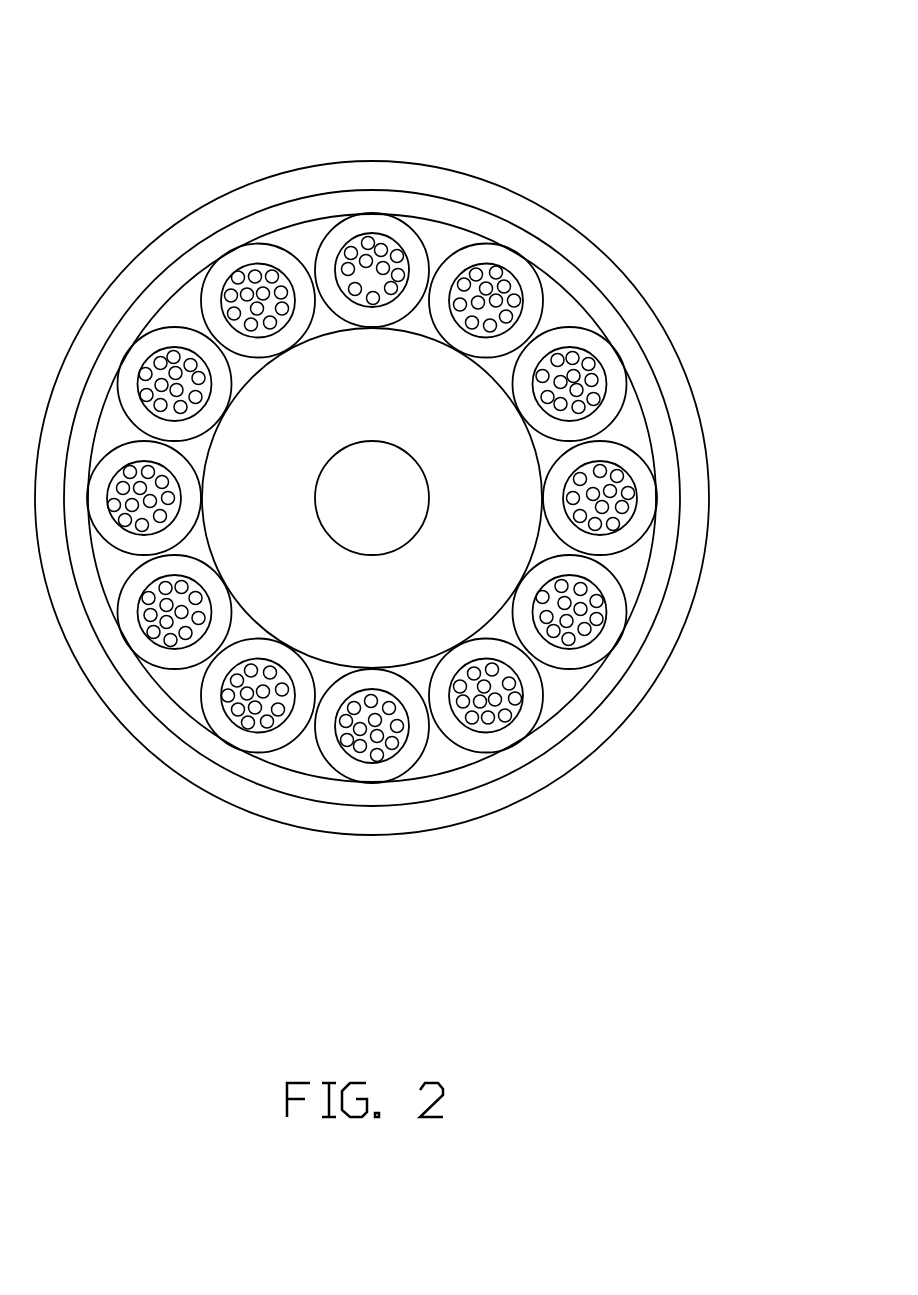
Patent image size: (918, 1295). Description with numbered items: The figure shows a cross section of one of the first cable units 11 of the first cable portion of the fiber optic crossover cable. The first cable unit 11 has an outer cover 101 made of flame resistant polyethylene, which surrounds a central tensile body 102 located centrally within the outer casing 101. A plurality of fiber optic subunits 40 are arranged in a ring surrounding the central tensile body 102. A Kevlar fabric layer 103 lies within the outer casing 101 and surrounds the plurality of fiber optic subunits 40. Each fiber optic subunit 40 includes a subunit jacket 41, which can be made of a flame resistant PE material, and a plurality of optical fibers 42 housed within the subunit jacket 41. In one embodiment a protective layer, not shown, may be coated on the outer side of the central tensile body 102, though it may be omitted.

The first cable unit 11 is at (414, 452).
The fiber optic subunit 40 is at (564, 273).
The subunit jacket 41 is at (533, 293).
The optical fiber 42 is at (563, 237).
The outer cover 101 is at (693, 548).
The central tensile body 102 is at (395, 491).
The Kevlar fabric layer 103 is at (669, 498).